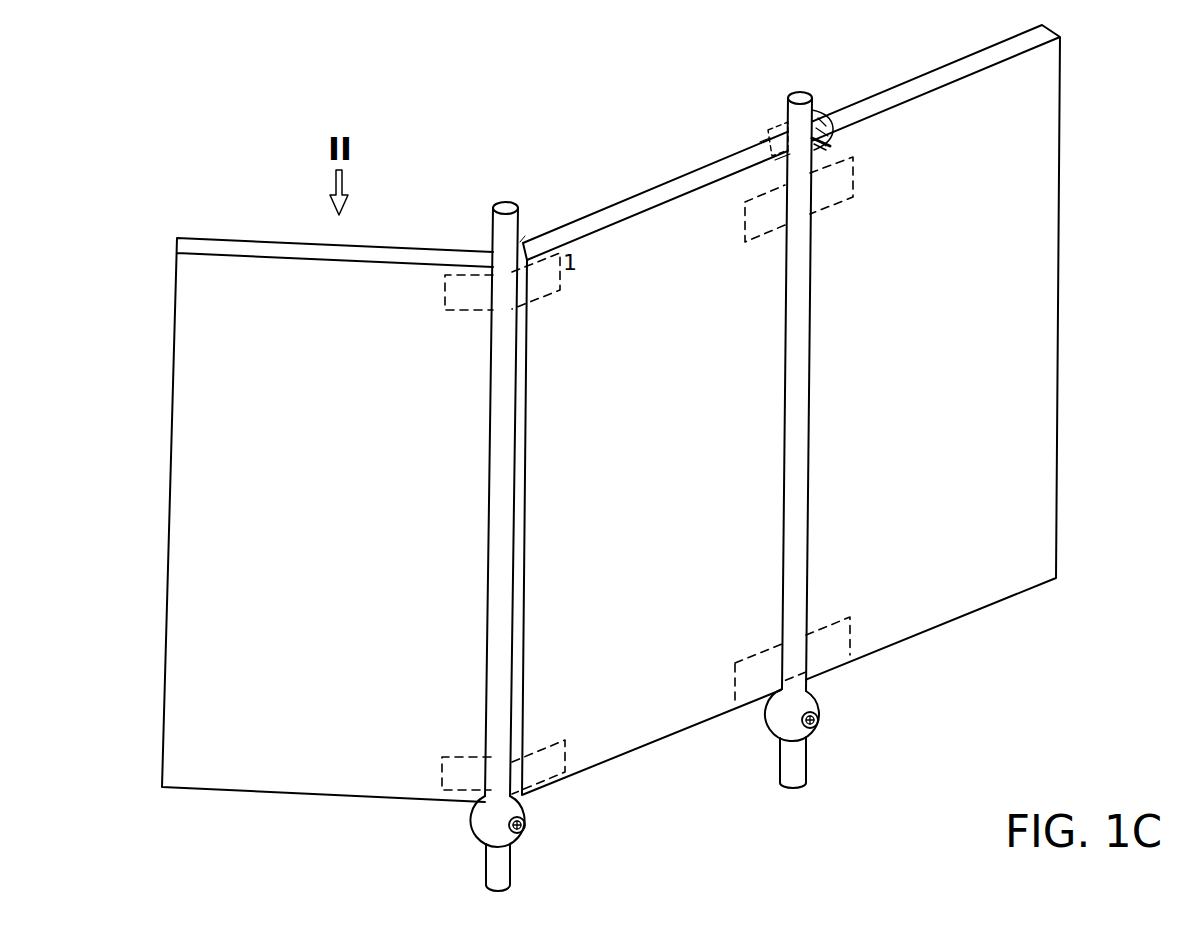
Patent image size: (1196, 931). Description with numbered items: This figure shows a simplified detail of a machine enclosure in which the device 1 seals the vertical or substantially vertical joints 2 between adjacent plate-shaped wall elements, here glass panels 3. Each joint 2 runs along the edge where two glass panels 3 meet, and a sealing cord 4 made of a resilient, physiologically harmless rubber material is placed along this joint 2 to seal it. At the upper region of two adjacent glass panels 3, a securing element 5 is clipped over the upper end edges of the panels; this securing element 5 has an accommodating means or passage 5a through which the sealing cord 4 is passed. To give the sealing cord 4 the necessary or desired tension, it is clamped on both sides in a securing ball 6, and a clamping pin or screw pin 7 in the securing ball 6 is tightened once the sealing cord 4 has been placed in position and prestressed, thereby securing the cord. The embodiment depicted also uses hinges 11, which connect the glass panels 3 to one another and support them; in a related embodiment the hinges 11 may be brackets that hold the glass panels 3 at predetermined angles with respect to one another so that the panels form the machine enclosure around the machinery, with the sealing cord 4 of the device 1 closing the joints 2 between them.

The device 1 is at (530, 236).
The joint 2 is at (520, 372).
The glass panel 3 is at (272, 326).
The sealing cord 4 is at (500, 488).
The securing element 5 is at (775, 138).
The passage 5a is at (818, 140).
The securing ball 6 is at (818, 115).
The clamping pin or screw pin 7 is at (820, 727).
The hinges 11 is at (460, 297).